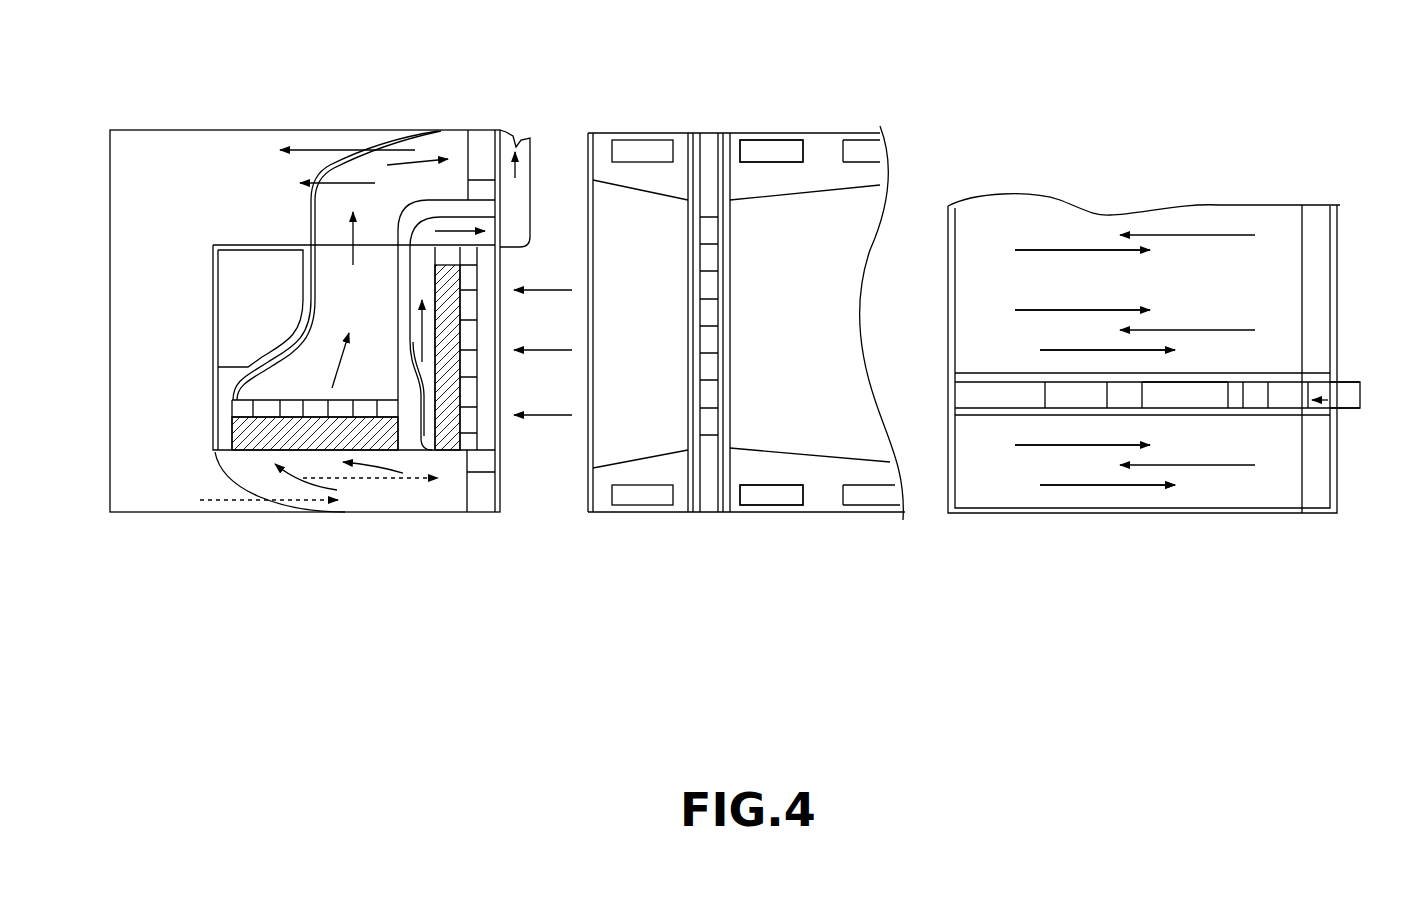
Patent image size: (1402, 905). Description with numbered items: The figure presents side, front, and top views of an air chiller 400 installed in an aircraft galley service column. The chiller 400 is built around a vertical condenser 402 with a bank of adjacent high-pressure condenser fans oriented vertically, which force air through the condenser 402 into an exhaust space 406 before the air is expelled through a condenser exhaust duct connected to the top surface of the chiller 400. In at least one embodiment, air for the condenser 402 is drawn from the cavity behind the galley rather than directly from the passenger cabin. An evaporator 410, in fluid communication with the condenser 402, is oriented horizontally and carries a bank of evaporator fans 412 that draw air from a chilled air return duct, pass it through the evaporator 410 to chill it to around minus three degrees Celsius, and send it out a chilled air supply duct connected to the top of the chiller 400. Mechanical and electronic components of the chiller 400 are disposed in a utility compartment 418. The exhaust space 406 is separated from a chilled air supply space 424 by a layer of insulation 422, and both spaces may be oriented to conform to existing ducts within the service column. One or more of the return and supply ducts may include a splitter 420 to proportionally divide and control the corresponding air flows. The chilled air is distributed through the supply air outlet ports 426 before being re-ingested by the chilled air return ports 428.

The air chiller 400 is at (117, 50).
The vertical condenser 402 is at (447, 347).
The exhaust space 406 is at (428, 284).
The evaporator 410 is at (243, 435).
The evaporator fans 412 is at (243, 410).
The utility compartment 418 is at (230, 288).
The splitter 420 is at (1328, 412).
The layer of insulation 422 is at (412, 370).
The chilled air supply space 424 is at (330, 257).
The supply air outlet ports 426 is at (643, 152).
The chilled air return ports 428 is at (643, 495).